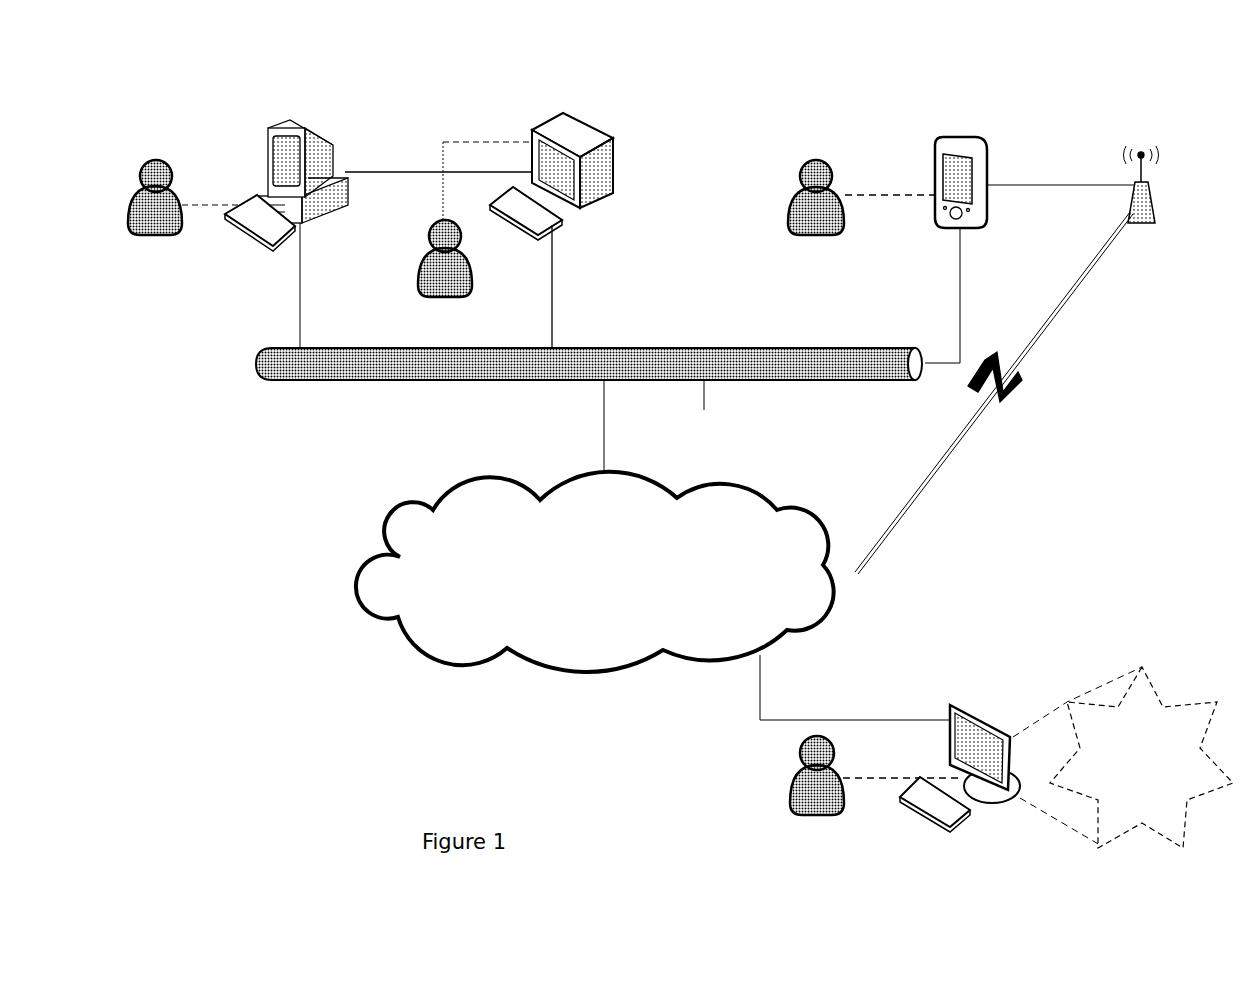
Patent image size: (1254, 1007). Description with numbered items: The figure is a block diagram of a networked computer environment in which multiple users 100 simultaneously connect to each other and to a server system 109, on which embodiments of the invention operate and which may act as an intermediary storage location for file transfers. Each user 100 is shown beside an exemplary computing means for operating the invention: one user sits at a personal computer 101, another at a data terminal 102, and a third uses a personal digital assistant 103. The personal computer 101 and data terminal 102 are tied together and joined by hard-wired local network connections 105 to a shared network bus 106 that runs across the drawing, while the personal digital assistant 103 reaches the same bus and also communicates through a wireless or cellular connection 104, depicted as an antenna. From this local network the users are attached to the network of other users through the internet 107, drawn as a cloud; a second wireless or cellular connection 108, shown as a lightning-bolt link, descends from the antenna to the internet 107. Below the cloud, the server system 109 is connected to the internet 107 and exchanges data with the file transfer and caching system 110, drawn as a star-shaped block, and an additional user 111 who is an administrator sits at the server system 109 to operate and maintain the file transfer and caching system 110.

The users 100 is at (157, 240).
The personal computer 101 is at (300, 124).
The data terminal 102 is at (590, 118).
The personal digital assistant 103 is at (965, 135).
The wireless or cellular connection 104 is at (1138, 150).
The local network connection 105 is at (556, 282).
The local network bus 106 is at (380, 386).
The internet 107 is at (438, 484).
The wireless or cellular connection 108 is at (1036, 356).
The server system 109 is at (1010, 718).
The file transfer and caching system 110 is at (1163, 690).
The administrator users 111 is at (787, 794).